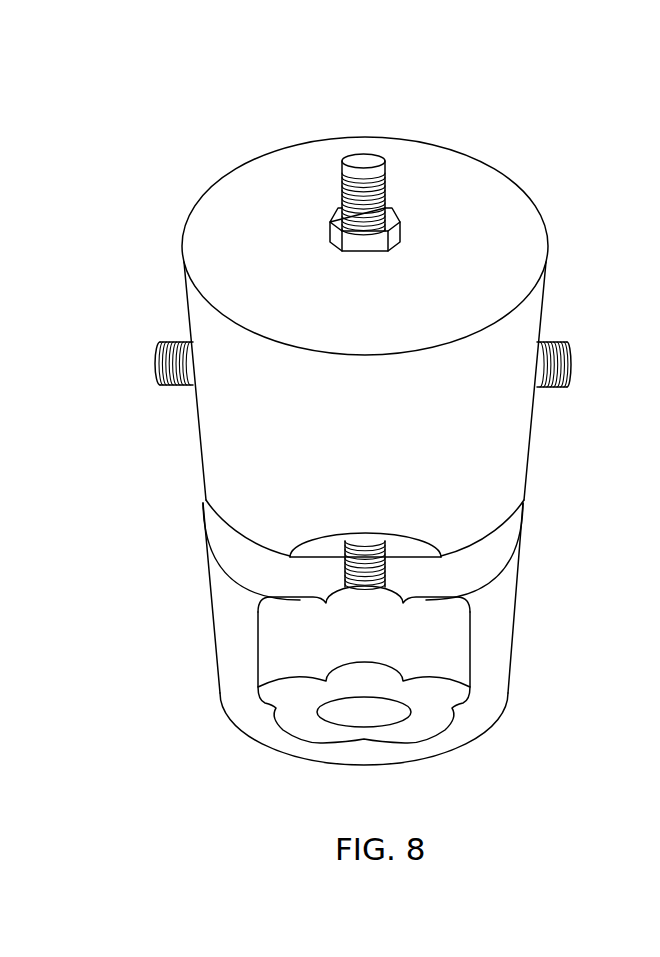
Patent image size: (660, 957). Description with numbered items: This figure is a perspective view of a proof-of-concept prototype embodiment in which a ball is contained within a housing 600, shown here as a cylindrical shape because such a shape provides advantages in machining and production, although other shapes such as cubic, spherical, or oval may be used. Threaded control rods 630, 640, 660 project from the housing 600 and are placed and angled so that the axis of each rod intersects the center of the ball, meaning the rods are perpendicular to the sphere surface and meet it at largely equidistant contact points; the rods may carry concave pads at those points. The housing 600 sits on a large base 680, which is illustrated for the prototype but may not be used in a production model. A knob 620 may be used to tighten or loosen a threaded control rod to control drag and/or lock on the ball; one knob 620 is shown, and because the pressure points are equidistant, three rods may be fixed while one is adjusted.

The housing 600 is at (260, 482).
The knob 620 is at (290, 723).
The threaded control rod 630 is at (364, 152).
The threaded control rod 640 is at (185, 362).
The threaded control rod 660 is at (560, 367).
The base 680 is at (500, 622).